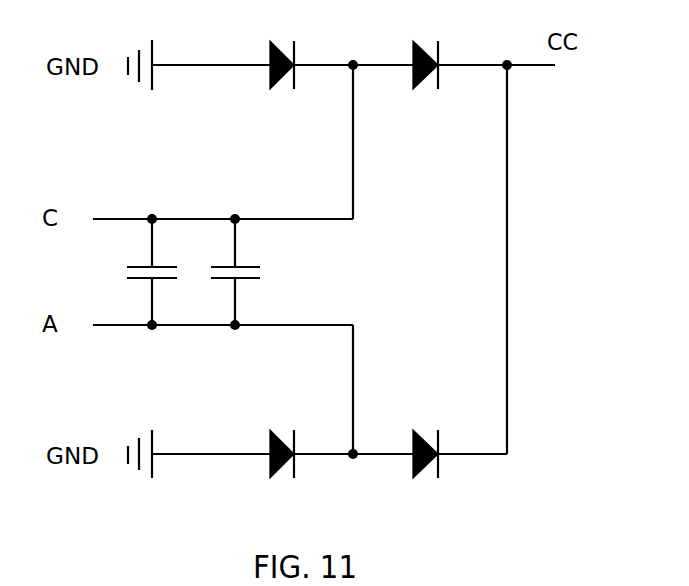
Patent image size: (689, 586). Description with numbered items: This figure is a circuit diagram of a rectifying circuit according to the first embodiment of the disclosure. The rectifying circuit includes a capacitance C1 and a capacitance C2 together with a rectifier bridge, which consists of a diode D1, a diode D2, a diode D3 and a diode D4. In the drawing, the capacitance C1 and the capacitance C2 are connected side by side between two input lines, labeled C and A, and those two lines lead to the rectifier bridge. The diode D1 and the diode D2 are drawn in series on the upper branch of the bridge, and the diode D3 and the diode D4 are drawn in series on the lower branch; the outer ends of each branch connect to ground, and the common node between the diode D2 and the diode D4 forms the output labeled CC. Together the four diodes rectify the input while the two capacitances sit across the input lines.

The diode D1 is at (263, 47).
The diode D2 is at (413, 47).
The diode D3 is at (273, 436).
The diode D4 is at (423, 436).
The capacitance C1 is at (136, 272).
The capacitance C2 is at (218, 272).